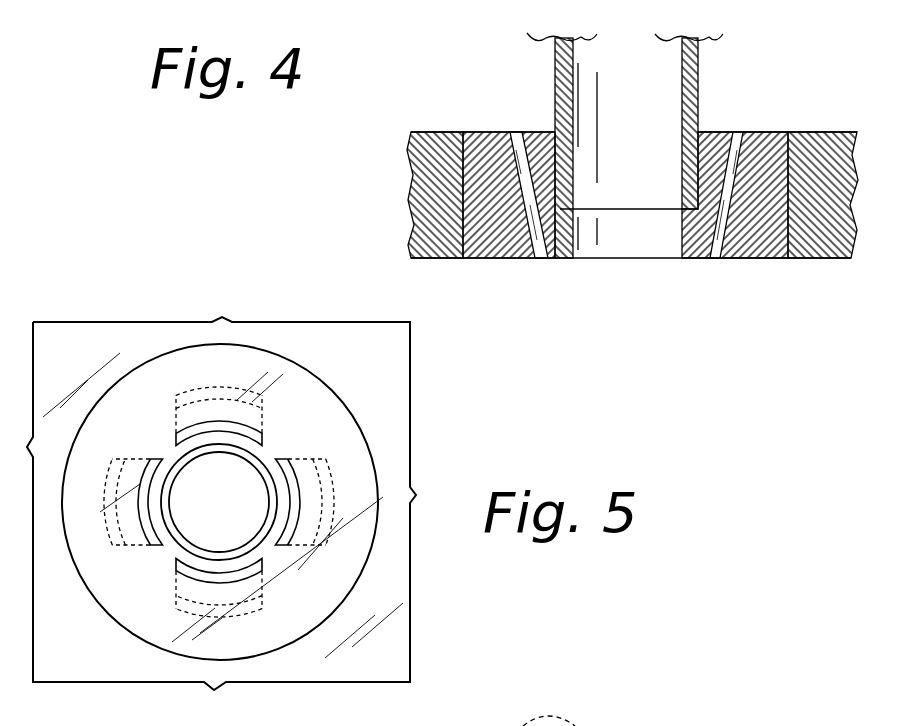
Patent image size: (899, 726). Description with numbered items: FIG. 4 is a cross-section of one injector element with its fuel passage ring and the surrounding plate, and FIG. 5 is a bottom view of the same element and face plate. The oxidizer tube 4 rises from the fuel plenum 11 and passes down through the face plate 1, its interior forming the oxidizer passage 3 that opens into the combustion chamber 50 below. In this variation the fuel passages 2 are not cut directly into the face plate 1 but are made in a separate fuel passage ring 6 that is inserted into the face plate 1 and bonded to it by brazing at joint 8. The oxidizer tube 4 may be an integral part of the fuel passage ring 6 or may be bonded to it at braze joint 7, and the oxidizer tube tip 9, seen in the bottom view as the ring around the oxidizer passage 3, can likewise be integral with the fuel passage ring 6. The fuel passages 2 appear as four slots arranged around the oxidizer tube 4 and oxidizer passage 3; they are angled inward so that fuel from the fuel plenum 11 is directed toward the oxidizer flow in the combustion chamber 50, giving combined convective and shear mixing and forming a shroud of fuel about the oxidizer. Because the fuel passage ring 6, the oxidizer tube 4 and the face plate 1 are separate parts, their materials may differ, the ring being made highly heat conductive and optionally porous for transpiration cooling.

In FIG. 4, the face plate 1 is at (438, 258).
In FIG. 5, the face plate 1 is at (80, 682).
In FIG. 4, the fuel passages 2 is at (508, 172).
In FIG. 5, the fuel passages 2 is at (260, 430).
In FIG. 4, the oxidizer passage 3 is at (643, 94).
In FIG. 5, the oxidizer passage 3 is at (228, 513).
In FIG. 4, the oxidizer tube 4 is at (556, 80).
In FIG. 4, the fuel passage ring 6 is at (758, 132).
In FIG. 5, the fuel passage ring 6 is at (230, 366).
In FIG. 4, the braze joint 7 is at (699, 124).
In FIG. 4, the joint 8 is at (463, 258).
In FIG. 5, the joint 8 is at (130, 370).
In FIG. 5, the oxidizer tube tip 9 is at (172, 457).
In FIG. 4, the fuel plenum 11 is at (795, 63).
In FIG. 4, the combustion chamber 50 is at (639, 346).